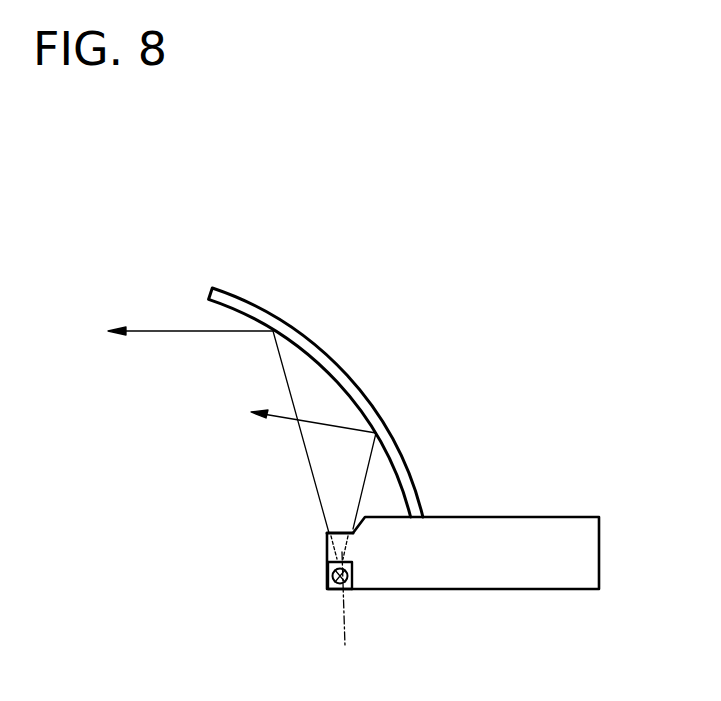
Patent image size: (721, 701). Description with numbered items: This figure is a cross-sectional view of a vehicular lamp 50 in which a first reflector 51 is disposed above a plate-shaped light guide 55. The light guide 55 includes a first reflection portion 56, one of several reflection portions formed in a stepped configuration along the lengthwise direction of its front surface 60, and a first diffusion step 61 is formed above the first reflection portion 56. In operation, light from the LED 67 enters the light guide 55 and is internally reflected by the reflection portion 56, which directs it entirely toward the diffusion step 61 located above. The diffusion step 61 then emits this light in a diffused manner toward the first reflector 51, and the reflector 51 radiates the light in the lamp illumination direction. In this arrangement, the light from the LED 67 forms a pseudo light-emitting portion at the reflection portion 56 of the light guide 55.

The vehicular lamp 50 is at (513, 296).
The first reflector 51 is at (231, 297).
The light guide 55 is at (586, 517).
The first reflection portion 56 is at (327, 583).
The front surface 60 is at (323, 548).
The first diffusion step 61 is at (337, 533).
The LED 67 is at (346, 612).